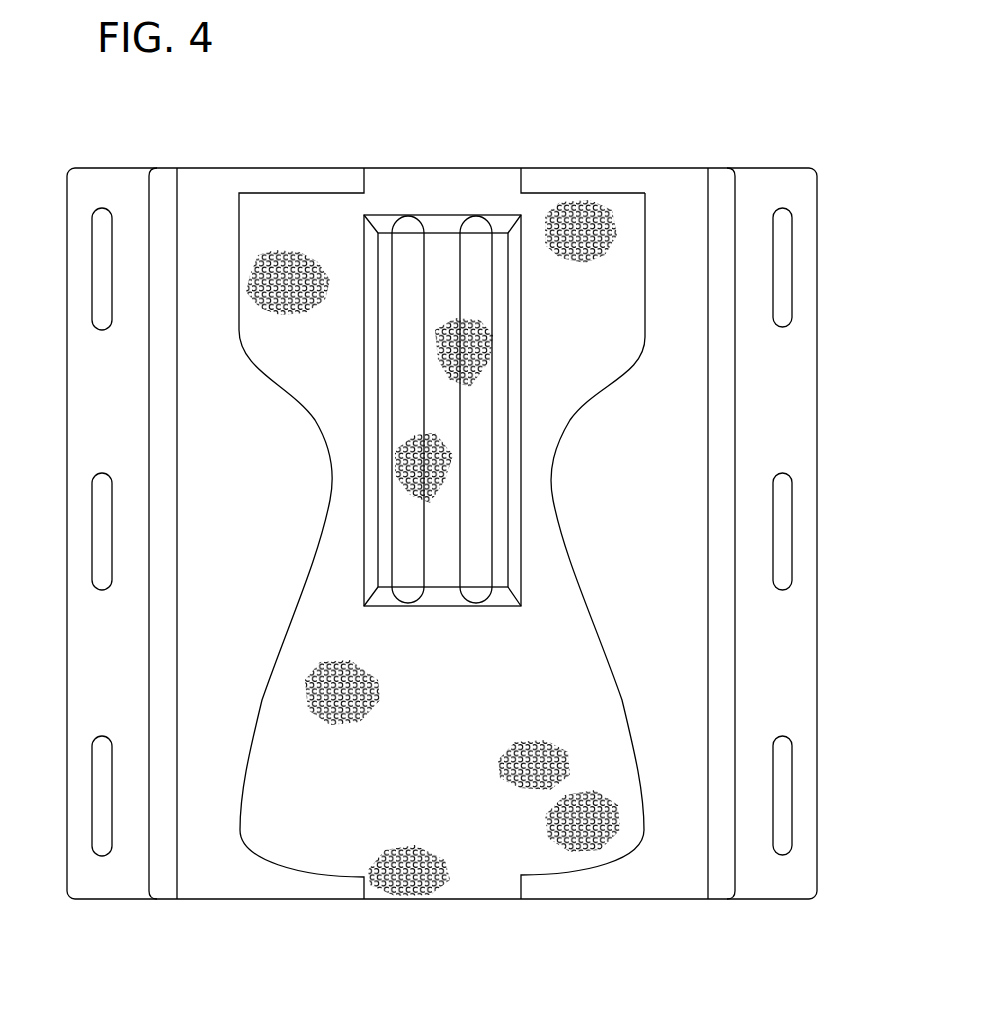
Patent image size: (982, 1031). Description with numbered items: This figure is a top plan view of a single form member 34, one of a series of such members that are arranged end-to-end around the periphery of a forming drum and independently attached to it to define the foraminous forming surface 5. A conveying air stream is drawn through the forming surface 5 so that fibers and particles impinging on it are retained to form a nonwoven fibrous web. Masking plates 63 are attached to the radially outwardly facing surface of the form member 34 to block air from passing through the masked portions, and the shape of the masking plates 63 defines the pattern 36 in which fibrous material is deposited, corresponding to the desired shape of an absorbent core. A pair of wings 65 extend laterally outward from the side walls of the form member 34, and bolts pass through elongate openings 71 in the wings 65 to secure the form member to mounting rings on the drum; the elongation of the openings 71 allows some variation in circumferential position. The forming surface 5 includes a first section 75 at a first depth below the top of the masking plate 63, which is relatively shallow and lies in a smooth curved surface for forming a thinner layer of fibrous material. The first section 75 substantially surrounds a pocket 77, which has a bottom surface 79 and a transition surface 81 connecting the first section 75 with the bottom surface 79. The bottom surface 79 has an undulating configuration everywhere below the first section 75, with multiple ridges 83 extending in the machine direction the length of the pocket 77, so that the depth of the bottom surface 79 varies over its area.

The foraminous forming surface 5 is at (606, 186).
The form member 34 is at (770, 145).
The pattern 36 is at (645, 258).
The masking plate 63 is at (297, 887).
The wing 65 is at (778, 450).
The elongate opening 71 is at (95, 258).
The first section 75 is at (296, 237).
The pocket 77 is at (445, 232).
The bottom surface 79 is at (437, 402).
The transition surface 81 is at (380, 223).
The ridge 83 is at (472, 273).